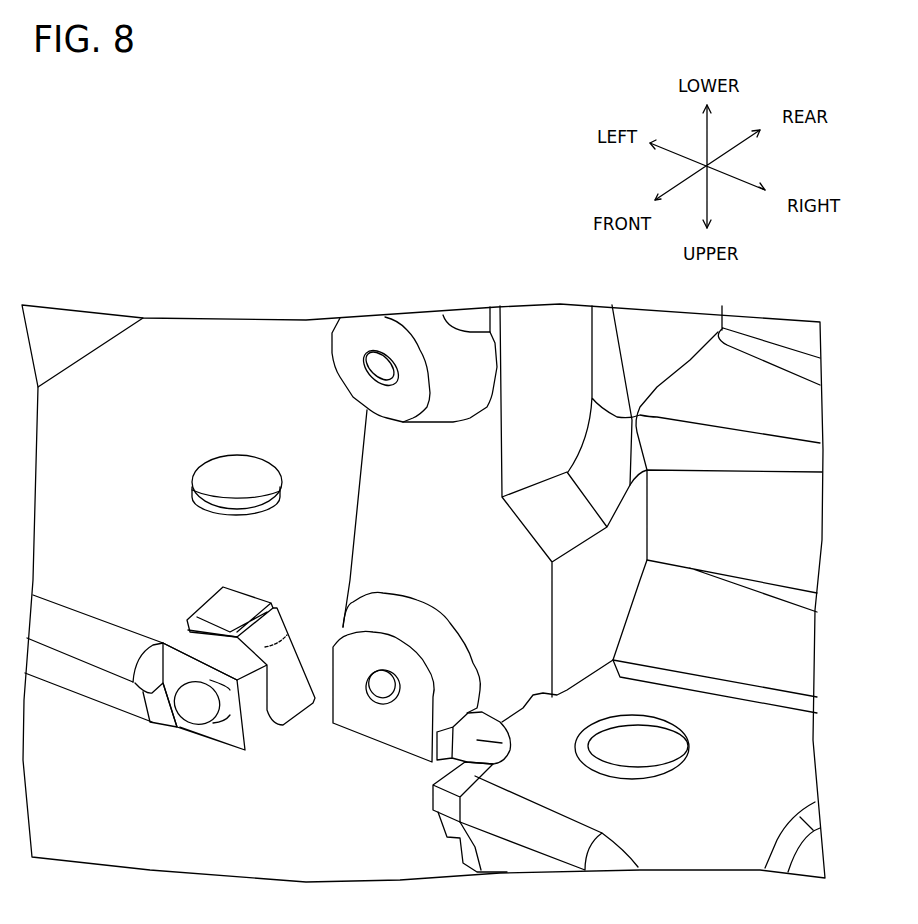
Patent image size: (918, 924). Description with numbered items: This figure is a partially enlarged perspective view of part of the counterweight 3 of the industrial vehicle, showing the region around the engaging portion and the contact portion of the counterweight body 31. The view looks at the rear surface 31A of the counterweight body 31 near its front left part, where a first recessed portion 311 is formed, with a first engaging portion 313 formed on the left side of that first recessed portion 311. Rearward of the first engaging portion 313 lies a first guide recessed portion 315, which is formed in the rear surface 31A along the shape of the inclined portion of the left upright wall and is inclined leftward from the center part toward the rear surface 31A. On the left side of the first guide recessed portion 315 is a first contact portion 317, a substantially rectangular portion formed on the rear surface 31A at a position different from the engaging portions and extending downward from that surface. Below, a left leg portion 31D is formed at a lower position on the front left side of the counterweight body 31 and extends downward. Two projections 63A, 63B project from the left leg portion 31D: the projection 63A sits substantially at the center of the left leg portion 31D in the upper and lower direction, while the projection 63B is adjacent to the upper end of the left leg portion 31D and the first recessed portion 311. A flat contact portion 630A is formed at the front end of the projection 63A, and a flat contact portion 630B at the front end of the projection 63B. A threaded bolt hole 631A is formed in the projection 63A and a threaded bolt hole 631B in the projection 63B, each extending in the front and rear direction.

The counterweight 3 is at (148, 768).
The counterweight body 31 is at (72, 700).
The rear surface 31A is at (257, 373).
The left leg portion 31D is at (390, 452).
The first recessed portion 311 is at (432, 797).
The first engaging portion 313 is at (213, 682).
The first guide recessed portion 315 is at (283, 600).
The first contact portion 317 is at (213, 608).
The projection 63A is at (414, 361).
The flat contact portion 630A is at (404, 399).
The threaded bolt hole 631A is at (380, 378).
The projection 63B is at (435, 668).
The flat contact portion 630B is at (355, 715).
The threaded bolt hole 631B is at (400, 680).